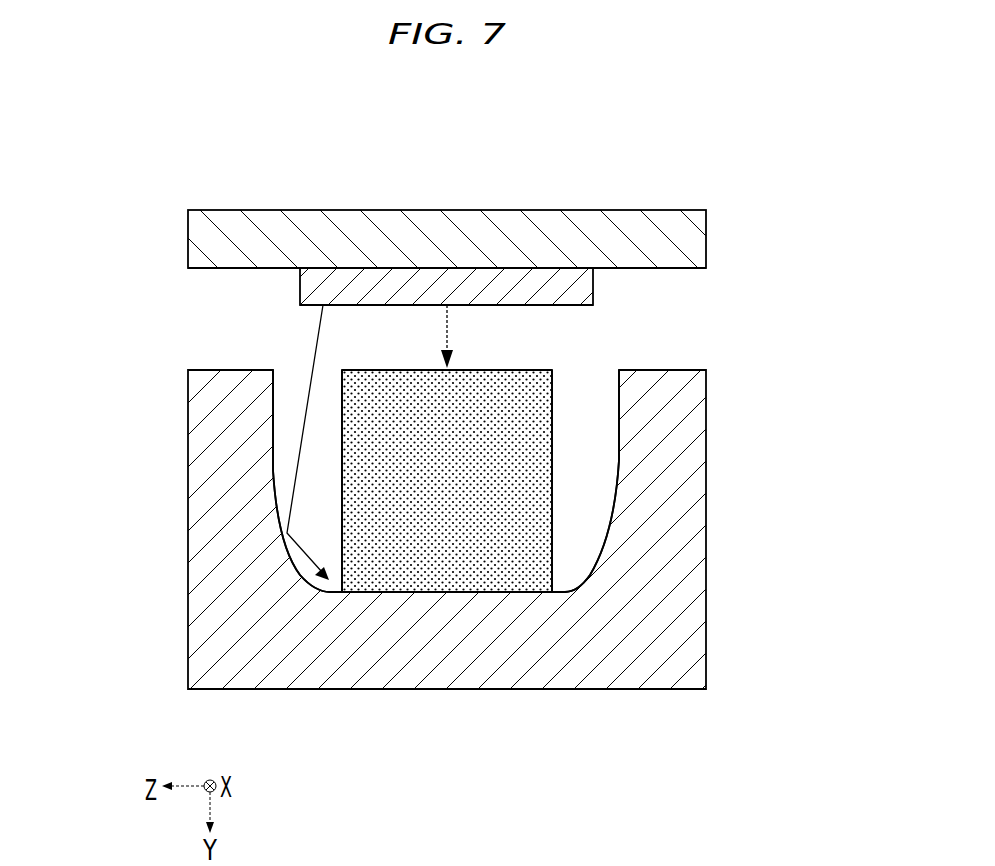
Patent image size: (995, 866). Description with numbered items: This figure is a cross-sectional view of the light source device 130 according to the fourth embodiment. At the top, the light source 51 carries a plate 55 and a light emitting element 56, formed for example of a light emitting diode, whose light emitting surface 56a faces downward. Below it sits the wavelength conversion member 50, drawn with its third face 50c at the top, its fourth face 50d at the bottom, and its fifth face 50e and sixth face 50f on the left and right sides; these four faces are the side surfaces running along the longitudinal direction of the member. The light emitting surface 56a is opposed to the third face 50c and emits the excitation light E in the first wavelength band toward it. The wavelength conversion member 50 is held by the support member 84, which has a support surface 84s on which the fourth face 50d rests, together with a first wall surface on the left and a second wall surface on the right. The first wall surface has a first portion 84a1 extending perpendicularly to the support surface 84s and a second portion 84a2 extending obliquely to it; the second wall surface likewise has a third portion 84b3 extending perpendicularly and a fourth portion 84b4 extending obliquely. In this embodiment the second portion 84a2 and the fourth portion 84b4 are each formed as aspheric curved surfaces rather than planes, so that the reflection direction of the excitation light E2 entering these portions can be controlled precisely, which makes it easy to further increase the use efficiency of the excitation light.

The light source device 130 is at (200, 185).
The light source 51 is at (675, 201).
The base plate of pressing member 55 is at (622, 217).
The light emitting element 56 is at (430, 283).
The light emitting surface 56a is at (497, 305).
The wavelength conversion member 50 is at (540, 430).
The third face 50c is at (540, 370).
The fourth face 50d is at (407, 593).
The fifth face 50e is at (342, 478).
The sixth face 50f is at (553, 483).
The support member 84 is at (706, 650).
The first portion 84a1 is at (273, 420).
The second portion 84a2 is at (298, 575).
The third portion 84b3 is at (622, 380).
The fourth portion 84b4 is at (597, 557).
The support surface 84s is at (501, 592).
The excitation light E is at (449, 343).
The excitation light E2 is at (318, 340).